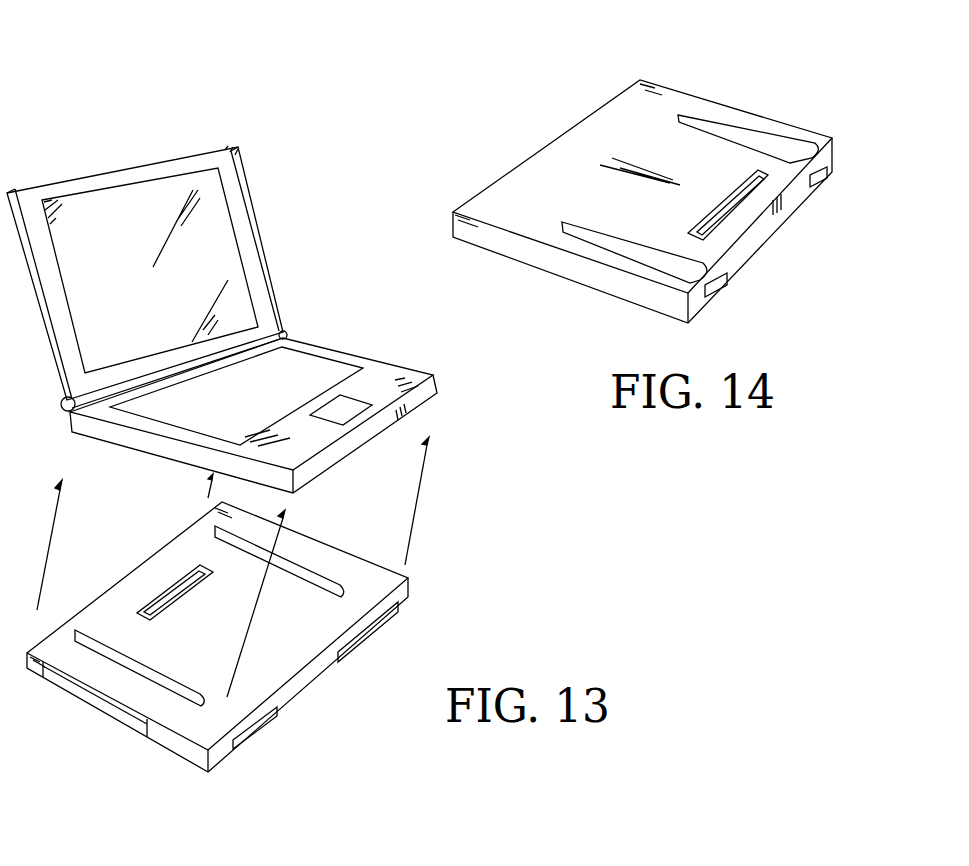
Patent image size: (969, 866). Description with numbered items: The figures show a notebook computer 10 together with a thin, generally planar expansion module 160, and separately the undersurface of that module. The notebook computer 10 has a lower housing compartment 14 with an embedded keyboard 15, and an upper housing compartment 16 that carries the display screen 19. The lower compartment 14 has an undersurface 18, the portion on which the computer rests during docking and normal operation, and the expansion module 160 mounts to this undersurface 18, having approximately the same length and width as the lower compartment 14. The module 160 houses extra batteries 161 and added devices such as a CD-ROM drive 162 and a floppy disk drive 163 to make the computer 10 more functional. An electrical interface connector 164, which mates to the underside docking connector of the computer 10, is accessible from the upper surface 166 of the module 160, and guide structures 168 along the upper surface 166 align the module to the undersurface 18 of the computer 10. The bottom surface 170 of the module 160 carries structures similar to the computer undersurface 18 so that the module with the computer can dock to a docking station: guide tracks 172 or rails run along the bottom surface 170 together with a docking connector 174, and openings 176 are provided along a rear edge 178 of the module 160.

In FIG. 13, the notebook computer 10 is at (223, 110).
In FIG. 13, the lower housing compartment 14 is at (251, 384).
In FIG. 13, the embedded keyboard 15 is at (312, 365).
In FIG. 13, the upper housing compartment 16 is at (156, 278).
In FIG. 13, the undersurface 18 is at (128, 447).
In FIG. 13, the display screen 19 is at (113, 254).
In FIG. 13, the expansion module 160 is at (233, 637).
In FIG. 14, the expansion module 160 is at (649, 194).
In FIG. 13, the extra batteries 161 is at (97, 697).
In FIG. 13, the CD-ROM drive 162 is at (375, 630).
In FIG. 13, the floppy disk drive 163 is at (273, 715).
In FIG. 13, the electrical interface connector 164 is at (192, 583).
In FIG. 13, the upper surface 166 is at (282, 645).
In FIG. 13, the guide structures 168 is at (320, 565).
In FIG. 14, the bottom surface 170 is at (596, 149).
In FIG. 14, the guide tracks 172 is at (698, 117).
In FIG. 14, the docking connector 174 is at (727, 200).
In FIG. 14, the openings 176 is at (817, 188).
In FIG. 14, the rear edge 178 is at (768, 232).